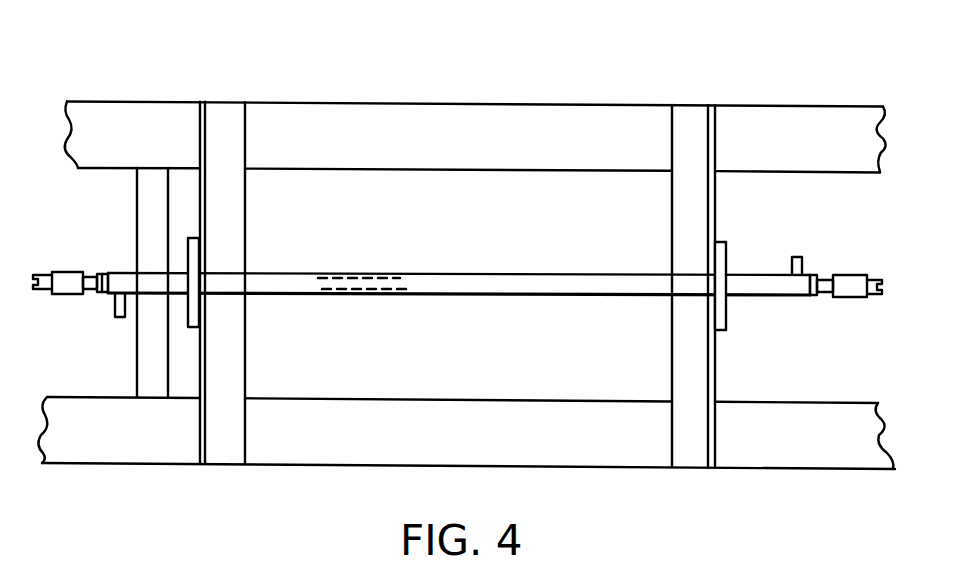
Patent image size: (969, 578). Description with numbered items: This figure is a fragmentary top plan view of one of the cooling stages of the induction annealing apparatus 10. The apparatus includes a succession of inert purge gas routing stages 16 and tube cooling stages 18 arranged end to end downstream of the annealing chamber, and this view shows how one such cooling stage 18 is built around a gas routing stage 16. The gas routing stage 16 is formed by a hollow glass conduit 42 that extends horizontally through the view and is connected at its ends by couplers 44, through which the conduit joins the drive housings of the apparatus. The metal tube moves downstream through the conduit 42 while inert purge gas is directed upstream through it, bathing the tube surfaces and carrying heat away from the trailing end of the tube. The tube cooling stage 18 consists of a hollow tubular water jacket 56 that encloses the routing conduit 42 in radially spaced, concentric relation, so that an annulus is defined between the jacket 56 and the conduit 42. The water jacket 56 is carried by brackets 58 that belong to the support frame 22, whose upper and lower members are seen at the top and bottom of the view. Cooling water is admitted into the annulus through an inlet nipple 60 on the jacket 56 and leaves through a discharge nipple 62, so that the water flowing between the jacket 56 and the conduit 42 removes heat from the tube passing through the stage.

The induction annealing apparatus 10 is at (466, 243).
The support frame 22 is at (356, 103).
The inert purge gas routing stage 16 is at (357, 272).
The tube cooling stage 18 is at (495, 295).
The hollow tubular water jacket 56 is at (459, 277).
The bracket 58 is at (137, 250).
The hollow glass conduit 42 is at (93, 272).
The coupler 44 is at (68, 296).
The inlet nipple 60 is at (797, 257).
The discharge nipple 62 is at (117, 318).